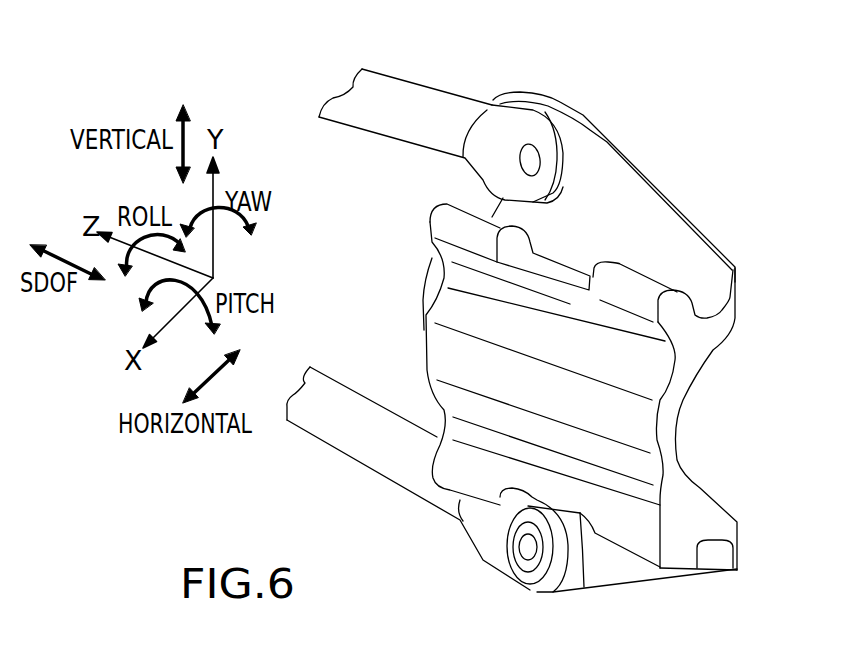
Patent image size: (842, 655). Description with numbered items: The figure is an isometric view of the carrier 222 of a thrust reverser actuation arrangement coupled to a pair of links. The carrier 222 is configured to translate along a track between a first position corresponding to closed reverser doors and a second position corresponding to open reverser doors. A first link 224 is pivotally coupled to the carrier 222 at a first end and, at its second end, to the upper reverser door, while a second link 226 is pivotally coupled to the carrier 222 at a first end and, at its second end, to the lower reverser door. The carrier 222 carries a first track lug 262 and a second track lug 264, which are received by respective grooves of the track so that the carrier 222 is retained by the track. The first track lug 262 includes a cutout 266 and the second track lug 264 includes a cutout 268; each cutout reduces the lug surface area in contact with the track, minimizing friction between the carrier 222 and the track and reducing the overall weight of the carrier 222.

The carrier 222 is at (667, 440).
The first link 224 is at (427, 103).
The second link 226 is at (338, 437).
The first track lug 262 is at (448, 223).
The second track lug 264 is at (677, 553).
The cutout 266 is at (593, 277).
The cutout 268 is at (584, 587).